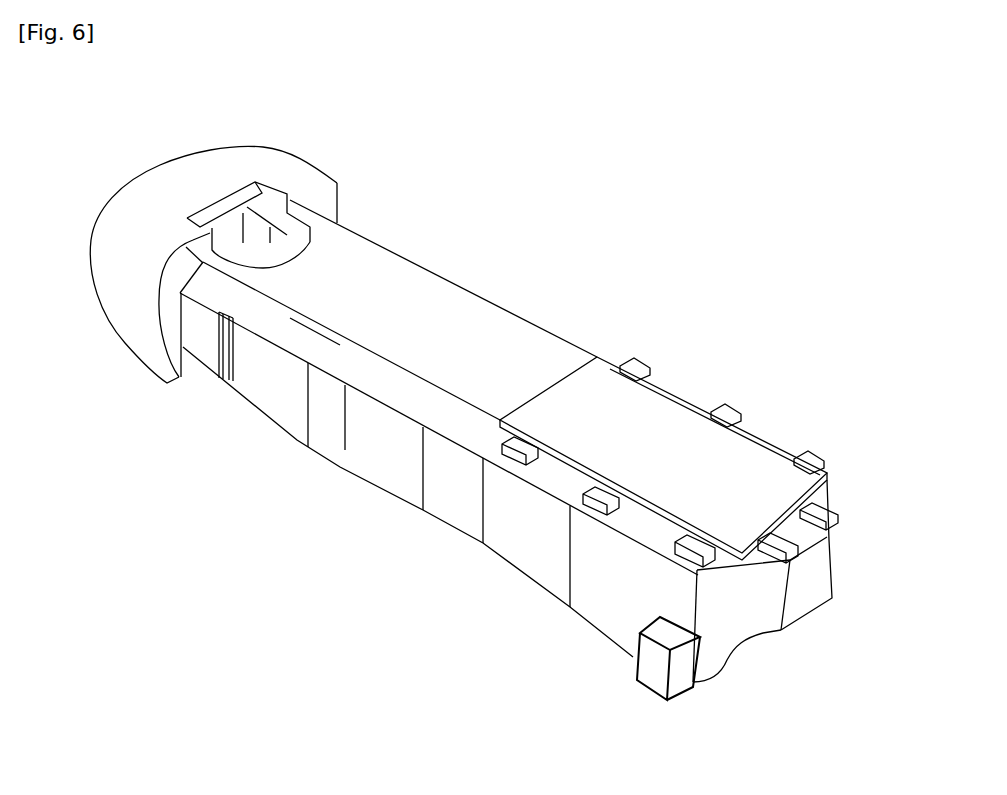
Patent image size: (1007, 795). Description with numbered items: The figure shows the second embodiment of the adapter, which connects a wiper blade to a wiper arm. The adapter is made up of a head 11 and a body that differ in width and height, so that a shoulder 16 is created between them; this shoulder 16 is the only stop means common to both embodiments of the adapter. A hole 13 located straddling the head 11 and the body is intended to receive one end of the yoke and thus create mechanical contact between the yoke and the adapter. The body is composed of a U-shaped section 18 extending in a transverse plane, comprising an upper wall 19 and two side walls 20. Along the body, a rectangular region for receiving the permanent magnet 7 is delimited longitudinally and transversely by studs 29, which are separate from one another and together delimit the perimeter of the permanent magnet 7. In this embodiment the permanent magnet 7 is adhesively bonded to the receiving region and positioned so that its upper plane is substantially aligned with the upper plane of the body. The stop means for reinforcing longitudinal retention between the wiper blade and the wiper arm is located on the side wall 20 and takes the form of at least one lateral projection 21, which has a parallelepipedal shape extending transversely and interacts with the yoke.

The permanent magnet 7 is at (590, 392).
The head 11 is at (167, 207).
The hole 13 is at (245, 245).
The shoulder 16 is at (315, 187).
The U-shaped section 18 is at (465, 472).
The upper wall 19 is at (313, 290).
The side walls 20 is at (198, 327).
The lateral projection 21 is at (655, 666).
The studs 29 is at (714, 408).